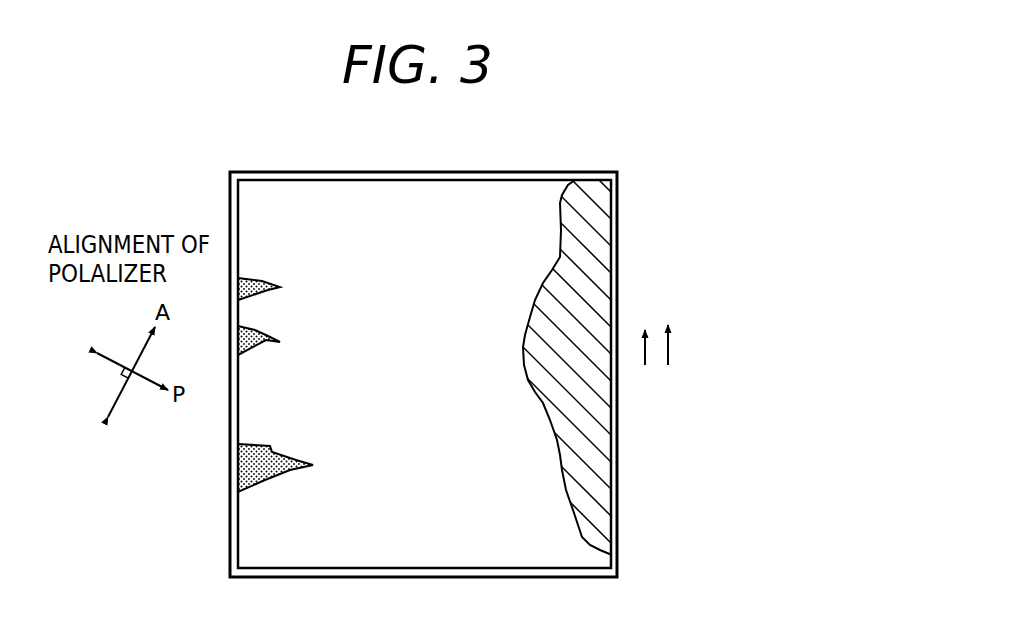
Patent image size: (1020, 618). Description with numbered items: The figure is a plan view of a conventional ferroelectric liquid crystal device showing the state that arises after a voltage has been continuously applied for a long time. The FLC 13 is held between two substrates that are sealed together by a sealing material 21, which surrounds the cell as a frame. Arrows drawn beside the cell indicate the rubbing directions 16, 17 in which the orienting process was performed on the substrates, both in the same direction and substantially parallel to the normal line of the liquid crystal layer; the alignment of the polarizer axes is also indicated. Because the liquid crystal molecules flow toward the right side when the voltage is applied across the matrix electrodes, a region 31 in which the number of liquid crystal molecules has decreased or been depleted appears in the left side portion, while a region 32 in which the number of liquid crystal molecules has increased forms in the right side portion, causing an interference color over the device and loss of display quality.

The FLC 13 is at (372, 200).
The sealing material 21 is at (507, 172).
The region in which the number of liquid crystal molecules has decreased or been dep 31 is at (270, 291).
The region in which the number of liquid crystal molecules has increased 32 is at (606, 487).
The rubbing direction 16 is at (645, 365).
The rubbing direction 17 is at (668, 365).